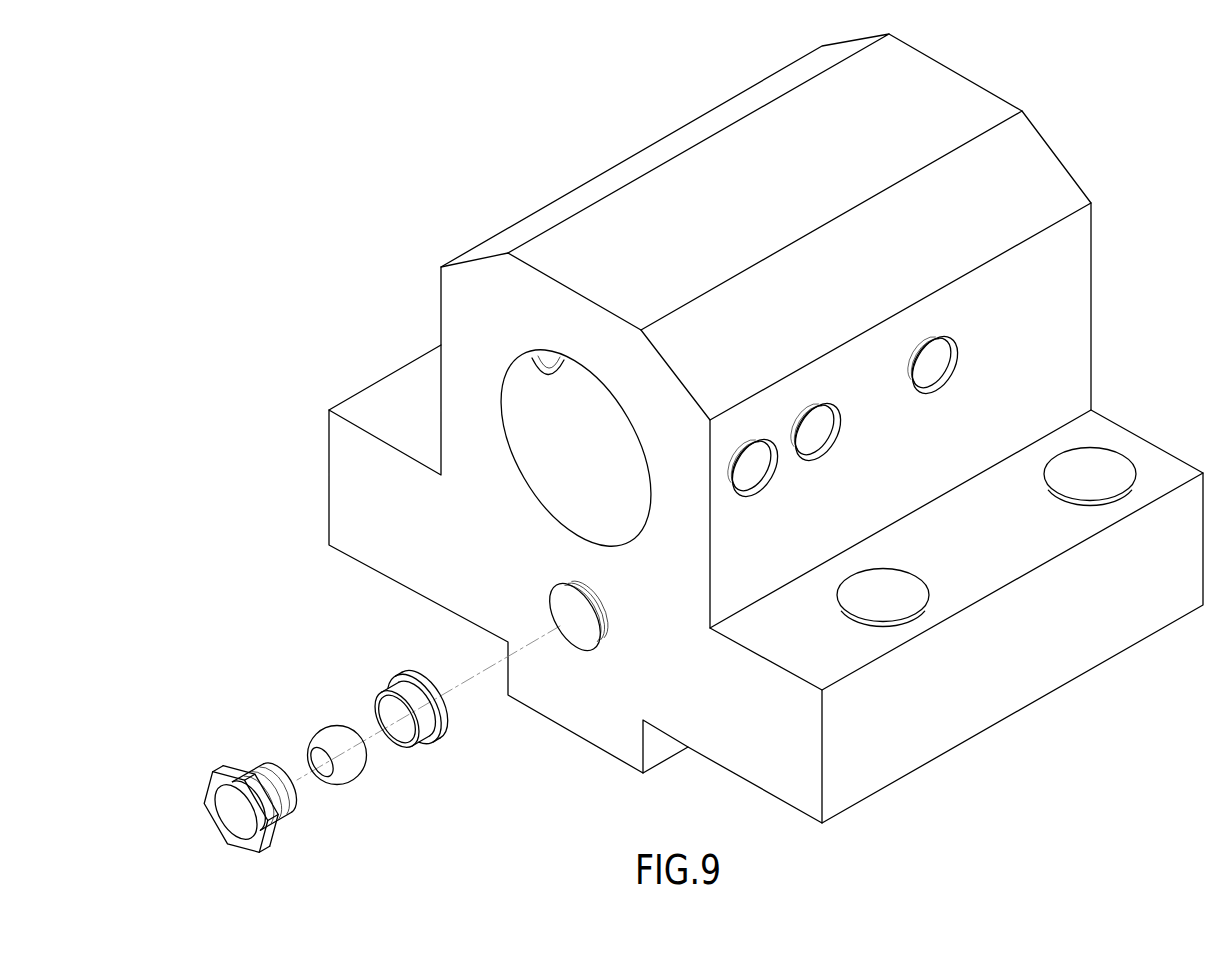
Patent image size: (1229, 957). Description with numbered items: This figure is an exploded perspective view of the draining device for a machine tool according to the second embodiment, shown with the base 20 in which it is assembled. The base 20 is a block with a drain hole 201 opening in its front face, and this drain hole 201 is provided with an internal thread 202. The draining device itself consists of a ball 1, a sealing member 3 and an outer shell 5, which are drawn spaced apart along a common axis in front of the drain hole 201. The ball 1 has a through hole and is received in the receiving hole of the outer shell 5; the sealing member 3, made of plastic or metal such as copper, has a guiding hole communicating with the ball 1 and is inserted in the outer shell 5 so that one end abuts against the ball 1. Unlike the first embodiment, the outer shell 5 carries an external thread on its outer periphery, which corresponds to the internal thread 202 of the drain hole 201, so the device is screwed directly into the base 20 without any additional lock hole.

The base 20 is at (348, 476).
The ball 1 is at (322, 739).
The sealing member 3 is at (404, 693).
The outer shell 5 is at (229, 777).
The drain hole 201 is at (598, 629).
The internal thread 202 is at (571, 643).